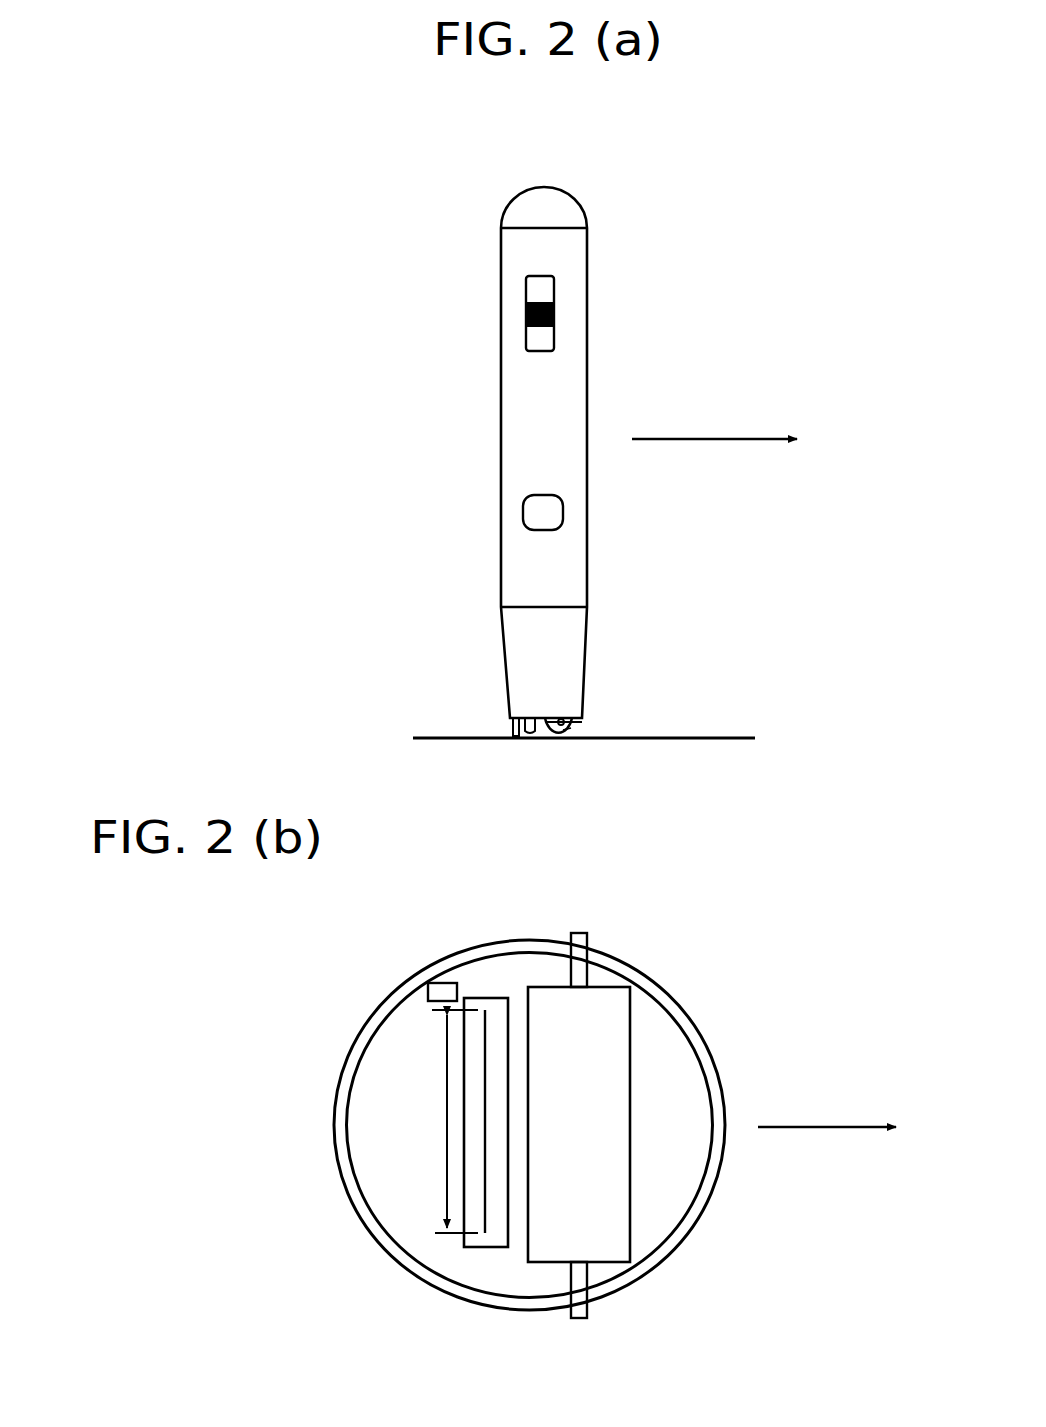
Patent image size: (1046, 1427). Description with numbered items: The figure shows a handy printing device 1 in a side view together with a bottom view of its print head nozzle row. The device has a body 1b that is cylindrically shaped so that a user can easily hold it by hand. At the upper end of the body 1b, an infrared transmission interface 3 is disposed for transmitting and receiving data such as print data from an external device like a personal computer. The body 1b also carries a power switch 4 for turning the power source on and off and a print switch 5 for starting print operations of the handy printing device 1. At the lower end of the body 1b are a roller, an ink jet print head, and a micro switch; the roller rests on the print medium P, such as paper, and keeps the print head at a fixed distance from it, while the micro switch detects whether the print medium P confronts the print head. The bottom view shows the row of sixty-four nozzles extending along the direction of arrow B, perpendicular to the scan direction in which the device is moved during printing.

The handy printing device 1 is at (415, 145).
The body 1b is at (510, 408).
The infrared transmission interface 3 is at (565, 206).
The power switch 4 is at (548, 290).
The print switch 5 is at (553, 512).
The print medium P is at (680, 738).
The nozzle row direction B is at (447, 1197).